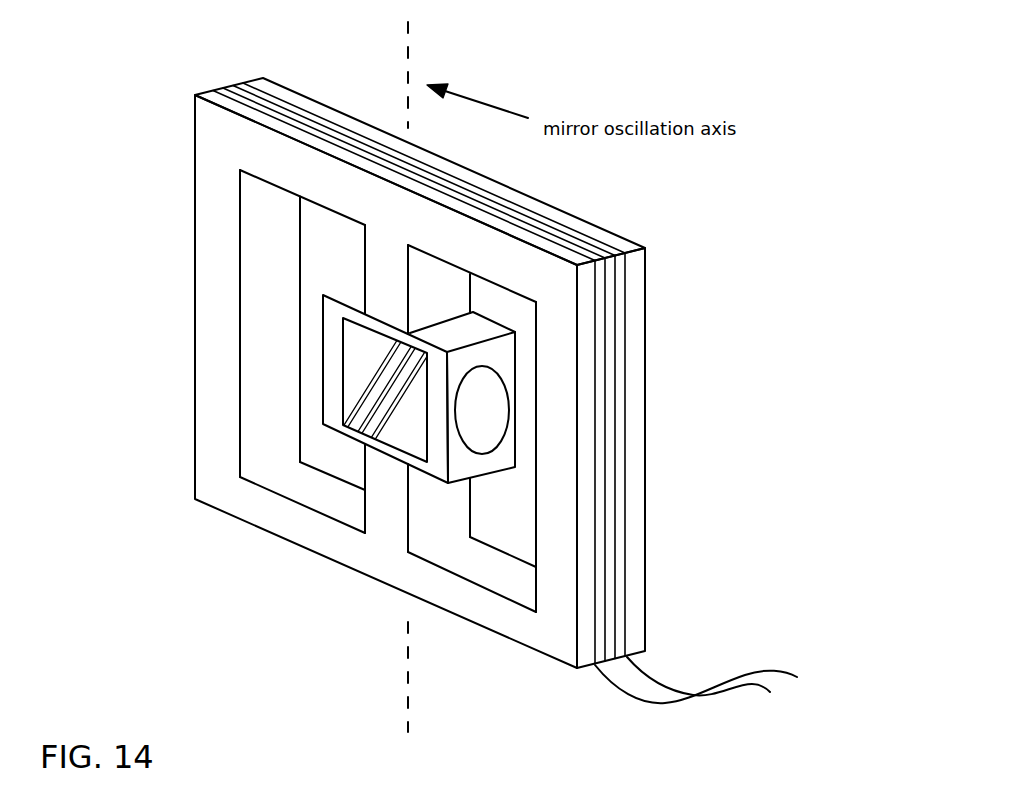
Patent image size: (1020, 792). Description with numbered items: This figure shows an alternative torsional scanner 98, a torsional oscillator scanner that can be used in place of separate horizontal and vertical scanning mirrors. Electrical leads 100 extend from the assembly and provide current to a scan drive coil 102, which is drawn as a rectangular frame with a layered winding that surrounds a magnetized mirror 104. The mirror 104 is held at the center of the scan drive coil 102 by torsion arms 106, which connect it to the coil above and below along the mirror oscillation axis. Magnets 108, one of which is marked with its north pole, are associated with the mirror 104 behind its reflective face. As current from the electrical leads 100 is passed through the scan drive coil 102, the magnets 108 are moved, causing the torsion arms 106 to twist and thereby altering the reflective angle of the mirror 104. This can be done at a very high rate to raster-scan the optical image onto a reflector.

The torsional scanner 98 is at (152, 248).
The electrical leads 100 is at (655, 680).
The scan drive coil 102 is at (664, 383).
The magnetized mirror 104 is at (372, 410).
The torsion arms 106 is at (383, 278).
The magnets 108 is at (488, 440).